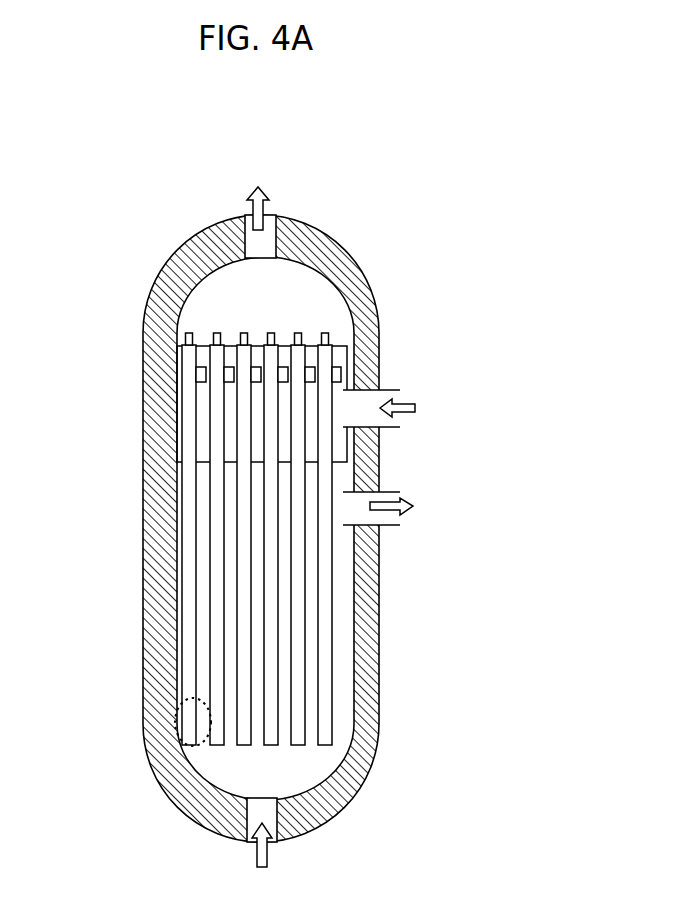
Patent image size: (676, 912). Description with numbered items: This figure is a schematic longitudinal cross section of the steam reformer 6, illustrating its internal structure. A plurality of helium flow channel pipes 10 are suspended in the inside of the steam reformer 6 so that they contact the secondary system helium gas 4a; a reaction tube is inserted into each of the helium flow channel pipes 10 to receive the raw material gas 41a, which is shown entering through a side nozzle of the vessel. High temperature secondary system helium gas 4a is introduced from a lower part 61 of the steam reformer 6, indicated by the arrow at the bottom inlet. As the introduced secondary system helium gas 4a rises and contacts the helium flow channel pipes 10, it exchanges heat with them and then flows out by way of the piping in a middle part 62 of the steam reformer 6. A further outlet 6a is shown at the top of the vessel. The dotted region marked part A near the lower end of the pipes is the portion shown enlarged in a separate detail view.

The steam reformer 6 is at (365, 270).
The vent outlet 6a is at (267, 200).
The helium flow channel pipes 10 is at (373, 762).
The raw material gas 41a is at (412, 418).
The middle part 62 is at (383, 525).
The lower part 61 is at (303, 838).
The secondary system helium gas 4a is at (405, 512).
The part A is at (160, 736).